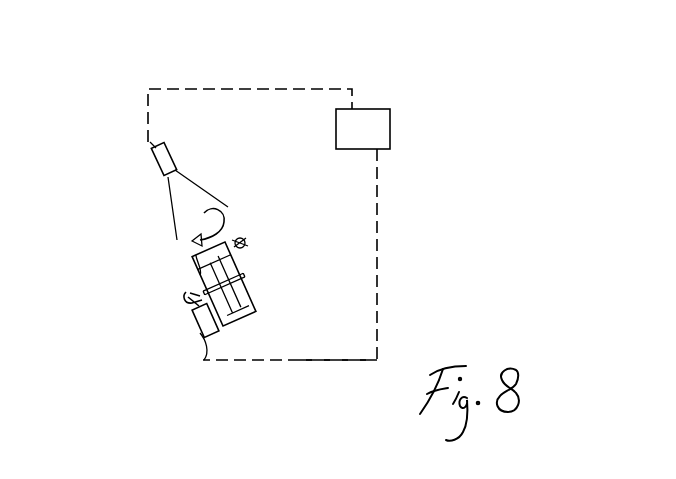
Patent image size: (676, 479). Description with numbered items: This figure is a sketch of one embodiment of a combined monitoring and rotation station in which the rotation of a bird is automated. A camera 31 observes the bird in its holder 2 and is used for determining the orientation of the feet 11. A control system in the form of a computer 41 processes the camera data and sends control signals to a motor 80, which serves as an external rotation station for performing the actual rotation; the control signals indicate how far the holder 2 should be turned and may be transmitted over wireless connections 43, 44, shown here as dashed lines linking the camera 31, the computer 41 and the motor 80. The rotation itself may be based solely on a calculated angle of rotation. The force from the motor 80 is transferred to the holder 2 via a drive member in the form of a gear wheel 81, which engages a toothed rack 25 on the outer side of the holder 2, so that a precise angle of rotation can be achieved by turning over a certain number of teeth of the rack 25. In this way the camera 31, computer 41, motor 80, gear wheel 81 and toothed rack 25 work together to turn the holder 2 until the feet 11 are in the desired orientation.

The holder 2 is at (200, 283).
The feet 11 is at (236, 236).
The toothed rack 25 is at (243, 275).
The camera 31 is at (150, 166).
The computer 41 is at (374, 130).
The wireless connection 43 is at (262, 88).
The wireless connection 44 is at (311, 362).
The motor 80 is at (194, 334).
The gear wheel 81 is at (183, 307).